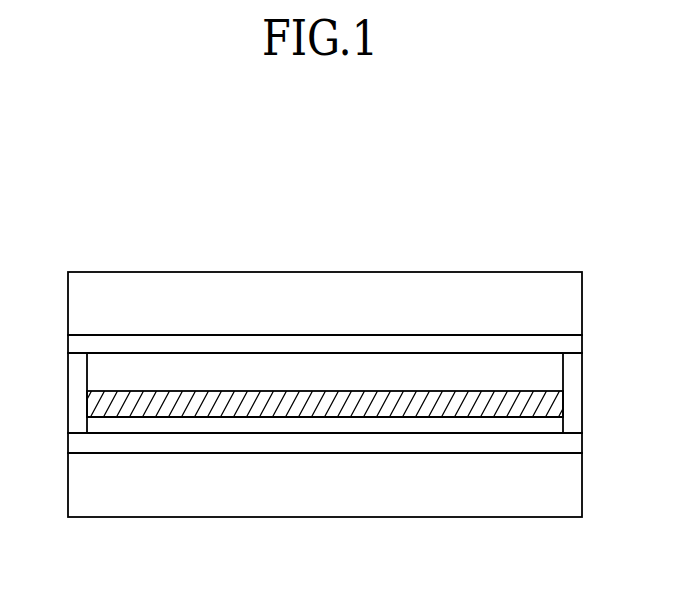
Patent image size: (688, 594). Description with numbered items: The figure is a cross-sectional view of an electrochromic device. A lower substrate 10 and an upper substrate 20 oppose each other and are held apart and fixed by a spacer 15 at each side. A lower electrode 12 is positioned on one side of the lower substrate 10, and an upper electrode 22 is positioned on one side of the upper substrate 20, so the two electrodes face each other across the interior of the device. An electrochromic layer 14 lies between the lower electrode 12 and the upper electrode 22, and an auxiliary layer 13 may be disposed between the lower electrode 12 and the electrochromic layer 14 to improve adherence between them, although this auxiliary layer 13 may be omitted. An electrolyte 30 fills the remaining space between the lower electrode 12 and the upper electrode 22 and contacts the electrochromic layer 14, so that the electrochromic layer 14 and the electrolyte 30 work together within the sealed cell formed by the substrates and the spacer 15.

The lower substrate 10 is at (497, 489).
The lower electrode 12 is at (414, 443).
The auxiliary layer 13 is at (322, 423).
The electrochromic layer 14 is at (231, 403).
The spacer 15 is at (77, 401).
The upper substrate 20 is at (417, 297).
The upper electrode 22 is at (313, 347).
The electrolyte 30 is at (196, 370).